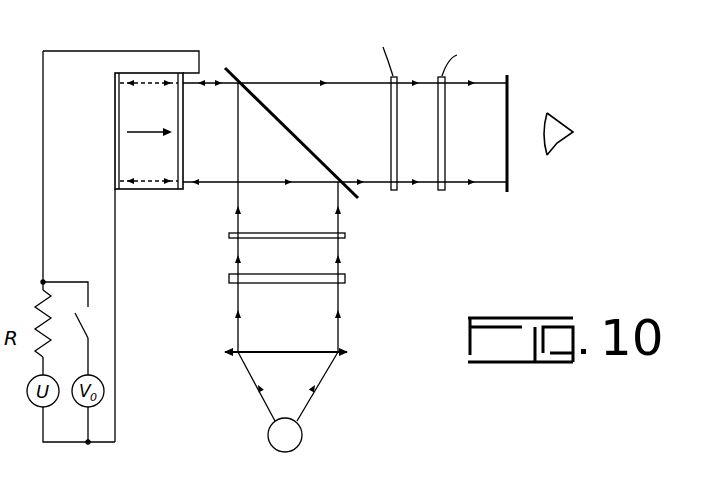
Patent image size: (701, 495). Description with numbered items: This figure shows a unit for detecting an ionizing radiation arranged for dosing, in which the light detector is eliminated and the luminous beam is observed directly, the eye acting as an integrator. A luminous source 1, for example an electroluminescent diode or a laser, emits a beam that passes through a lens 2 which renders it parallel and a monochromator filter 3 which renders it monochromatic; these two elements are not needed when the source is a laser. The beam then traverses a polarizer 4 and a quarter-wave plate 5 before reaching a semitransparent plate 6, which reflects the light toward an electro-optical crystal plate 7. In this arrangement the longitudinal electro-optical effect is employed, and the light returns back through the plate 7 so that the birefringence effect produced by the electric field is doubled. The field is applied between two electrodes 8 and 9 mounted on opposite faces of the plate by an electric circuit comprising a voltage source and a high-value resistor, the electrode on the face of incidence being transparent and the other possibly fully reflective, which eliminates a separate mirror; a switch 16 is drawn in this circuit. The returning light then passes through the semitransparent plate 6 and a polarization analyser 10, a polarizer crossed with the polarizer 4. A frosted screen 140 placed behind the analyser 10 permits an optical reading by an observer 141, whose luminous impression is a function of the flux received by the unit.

The luminous source 1 is at (302, 435).
The lens 2 is at (340, 343).
The monochromator filter 3 is at (345, 280).
The polarizer 4 is at (345, 235).
The quarter-wave plate 5 is at (393, 190).
The semitransparent plate 6 is at (226, 67).
The electro-optical crystal plate 7 is at (130, 95).
The electrode 8 is at (115, 145).
The electrode 9 is at (185, 128).
The polarization analyser 10 is at (442, 190).
The switch 16 is at (85, 323).
The frosted screen 140 is at (507, 160).
The observer 141 is at (557, 143).